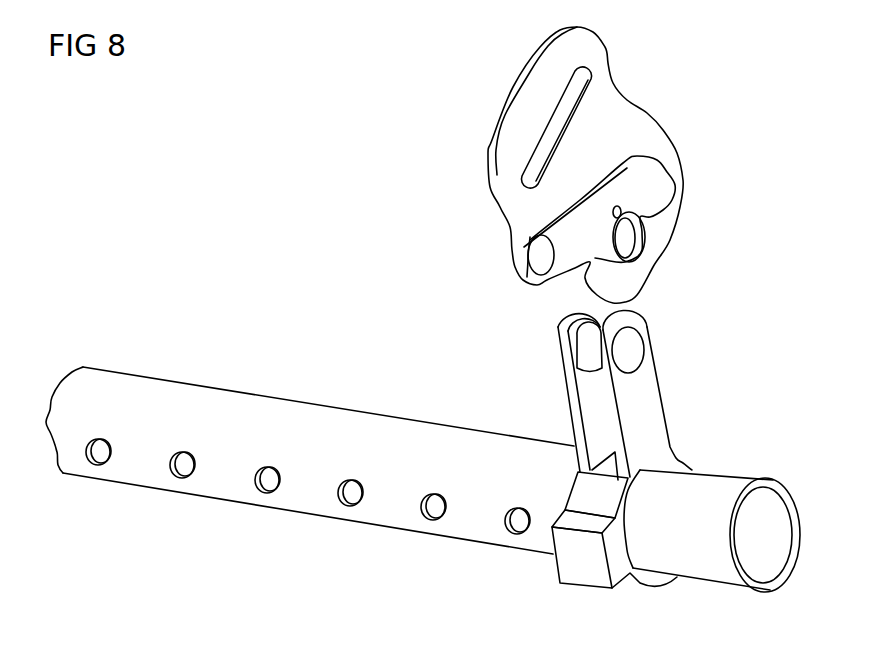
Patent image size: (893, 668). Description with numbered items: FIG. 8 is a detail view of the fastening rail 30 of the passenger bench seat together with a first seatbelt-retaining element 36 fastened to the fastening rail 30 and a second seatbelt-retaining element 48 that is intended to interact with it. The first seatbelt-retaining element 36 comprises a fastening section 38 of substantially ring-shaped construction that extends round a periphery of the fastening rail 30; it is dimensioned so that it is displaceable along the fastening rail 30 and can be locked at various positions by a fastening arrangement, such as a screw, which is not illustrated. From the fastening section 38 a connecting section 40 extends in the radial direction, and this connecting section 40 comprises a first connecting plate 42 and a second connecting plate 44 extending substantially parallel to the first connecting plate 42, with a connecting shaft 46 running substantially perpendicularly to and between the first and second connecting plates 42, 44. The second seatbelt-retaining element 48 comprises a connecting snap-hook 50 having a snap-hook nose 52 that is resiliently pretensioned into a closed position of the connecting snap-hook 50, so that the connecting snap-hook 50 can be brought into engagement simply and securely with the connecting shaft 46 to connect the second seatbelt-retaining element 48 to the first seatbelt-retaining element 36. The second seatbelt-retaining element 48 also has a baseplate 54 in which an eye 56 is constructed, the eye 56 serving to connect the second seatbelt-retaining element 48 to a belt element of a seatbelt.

The fastening rail 30 is at (285, 410).
The first seatbelt-retaining element 36 is at (695, 437).
The fastening section 38 is at (567, 568).
The connecting section 40 is at (629, 390).
The first connecting plate 42 is at (570, 387).
The second connecting plate 44 is at (643, 388).
The connecting shaft 46 is at (583, 349).
The second seatbelt-retaining element 48 is at (613, 165).
The connecting snap-hook 50 is at (677, 185).
The snap-hook nose 52 is at (593, 257).
The baseplate 54 is at (607, 107).
The eye 56 is at (578, 78).